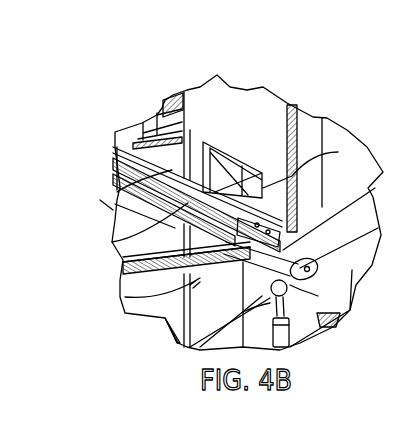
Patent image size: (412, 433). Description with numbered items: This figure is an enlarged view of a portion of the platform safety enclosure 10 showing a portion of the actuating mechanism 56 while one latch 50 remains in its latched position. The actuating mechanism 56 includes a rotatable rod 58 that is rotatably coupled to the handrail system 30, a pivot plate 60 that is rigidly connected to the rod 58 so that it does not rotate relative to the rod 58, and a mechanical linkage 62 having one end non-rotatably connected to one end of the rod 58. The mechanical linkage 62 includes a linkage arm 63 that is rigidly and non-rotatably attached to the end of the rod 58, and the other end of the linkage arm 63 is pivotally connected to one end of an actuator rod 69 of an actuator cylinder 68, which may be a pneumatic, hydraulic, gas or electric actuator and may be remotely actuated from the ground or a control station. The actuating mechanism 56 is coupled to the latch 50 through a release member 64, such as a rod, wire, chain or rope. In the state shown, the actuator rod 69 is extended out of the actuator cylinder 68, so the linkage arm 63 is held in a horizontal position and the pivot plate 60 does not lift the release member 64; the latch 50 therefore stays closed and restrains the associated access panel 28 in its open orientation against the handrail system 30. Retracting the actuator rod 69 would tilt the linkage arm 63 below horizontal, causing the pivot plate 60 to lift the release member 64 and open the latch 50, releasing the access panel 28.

The platform safety enclosure 10 is at (346, 69).
The access panel 28 is at (222, 107).
The handrail system 30 is at (150, 297).
The latch 50 is at (293, 175).
The actuating mechanism 56 is at (117, 240).
The rotatable rod 58 is at (283, 232).
The pivot plate 60 is at (117, 192).
The mechanical linkage 62 is at (307, 308).
The linkage arm 63 is at (303, 262).
The release member 64 is at (147, 148).
The actuator cylinder 68 is at (305, 342).
The actuator rod 69 is at (190, 346).